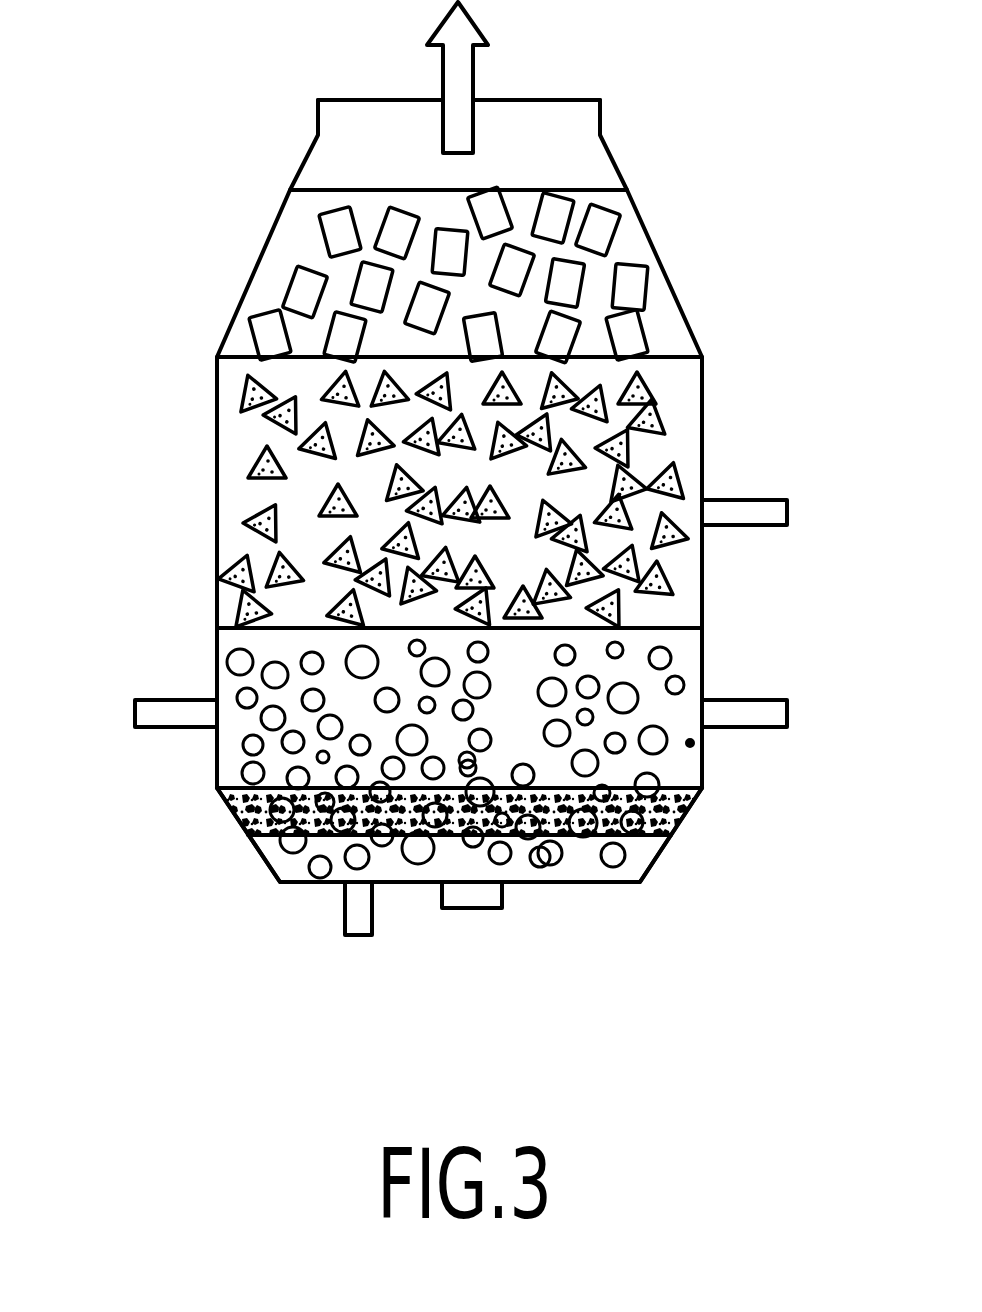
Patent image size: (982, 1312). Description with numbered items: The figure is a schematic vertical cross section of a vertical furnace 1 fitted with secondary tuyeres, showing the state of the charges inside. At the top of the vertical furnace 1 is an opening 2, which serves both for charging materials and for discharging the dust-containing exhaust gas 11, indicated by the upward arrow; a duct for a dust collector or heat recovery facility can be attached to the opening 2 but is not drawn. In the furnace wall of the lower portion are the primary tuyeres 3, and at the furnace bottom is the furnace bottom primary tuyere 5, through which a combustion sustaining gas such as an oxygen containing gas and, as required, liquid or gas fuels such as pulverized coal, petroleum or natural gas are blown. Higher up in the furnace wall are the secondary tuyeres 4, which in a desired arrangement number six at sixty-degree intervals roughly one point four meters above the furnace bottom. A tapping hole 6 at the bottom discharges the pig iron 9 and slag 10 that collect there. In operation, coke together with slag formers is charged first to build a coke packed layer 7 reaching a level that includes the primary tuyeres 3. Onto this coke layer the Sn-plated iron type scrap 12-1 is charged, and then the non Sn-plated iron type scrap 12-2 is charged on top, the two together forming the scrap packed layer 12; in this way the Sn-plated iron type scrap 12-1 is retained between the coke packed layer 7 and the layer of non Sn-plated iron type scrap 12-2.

The vertical furnace 1 is at (662, 265).
The opening 2 is at (522, 118).
The primary tuyere 3 is at (160, 700).
The secondary tuyere 4 is at (745, 500).
The furnace bottom primary tuyere 5 is at (345, 936).
The tapping hole 6 is at (455, 908).
The coke packed layer 7 is at (292, 743).
The pig iron 9 is at (603, 882).
The slag 10 is at (612, 787).
The exhaust gas 11 is at (442, 80).
The scrap packed layer 12 is at (262, 438).
The Sn-plated iron type scrap 12-1 is at (248, 525).
The non Sn-plated iron type scrap 12-2 is at (333, 236).